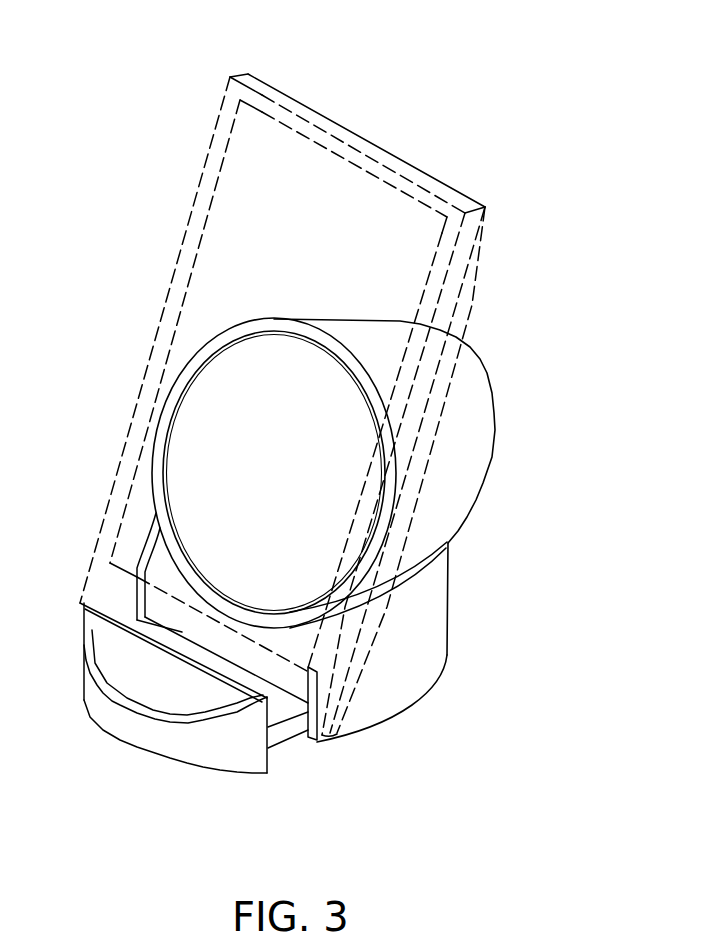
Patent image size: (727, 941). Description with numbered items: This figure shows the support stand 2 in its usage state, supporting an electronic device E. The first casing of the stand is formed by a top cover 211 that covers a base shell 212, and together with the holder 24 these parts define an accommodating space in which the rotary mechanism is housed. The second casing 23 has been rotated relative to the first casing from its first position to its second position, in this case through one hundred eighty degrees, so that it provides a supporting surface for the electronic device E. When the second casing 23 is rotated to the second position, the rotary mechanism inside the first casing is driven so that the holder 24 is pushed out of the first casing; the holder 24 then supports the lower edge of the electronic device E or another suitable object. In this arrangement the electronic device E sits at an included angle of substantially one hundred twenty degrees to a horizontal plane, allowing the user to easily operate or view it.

The electronic device E is at (230, 97).
The support stand 2 is at (540, 376).
The second casing 23 is at (367, 343).
The top cover 211 is at (157, 570).
The base shell 212 is at (402, 670).
The holder 24 is at (100, 700).